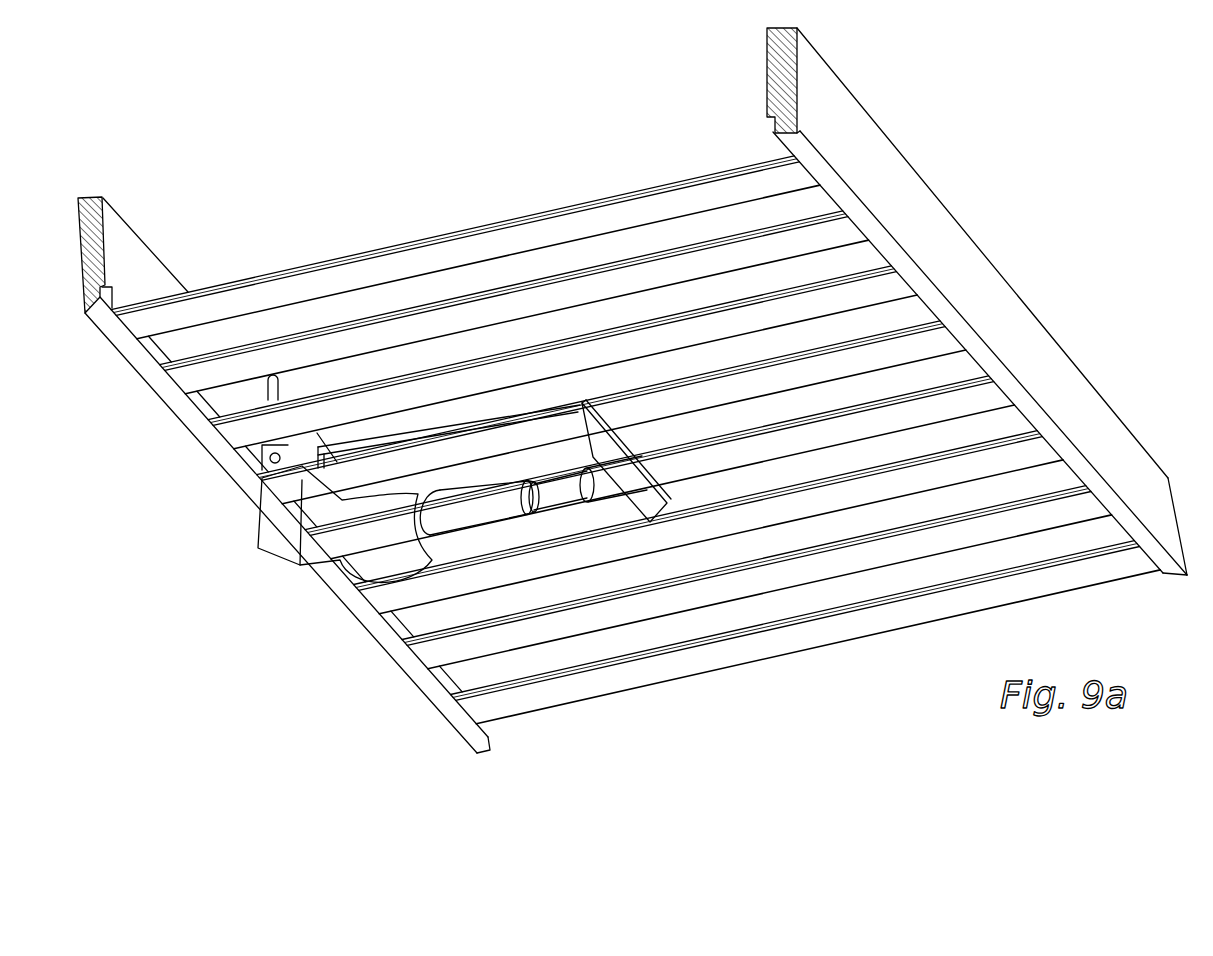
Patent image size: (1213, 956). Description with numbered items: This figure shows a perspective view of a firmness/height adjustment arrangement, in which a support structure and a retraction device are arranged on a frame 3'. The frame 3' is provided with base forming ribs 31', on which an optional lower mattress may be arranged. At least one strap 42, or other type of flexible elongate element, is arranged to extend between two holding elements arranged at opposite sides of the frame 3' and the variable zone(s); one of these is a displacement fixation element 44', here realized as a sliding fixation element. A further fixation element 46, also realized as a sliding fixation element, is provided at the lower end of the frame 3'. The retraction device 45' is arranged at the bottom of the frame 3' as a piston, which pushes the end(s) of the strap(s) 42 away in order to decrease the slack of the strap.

The strap 42 is at (880, 328).
The frame 3' is at (287, 525).
The displacement fixation element 44' is at (232, 466).
The further fixation element 46 is at (270, 466).
The retraction device 45' is at (452, 565).
The base forming ribs 31' is at (742, 612).